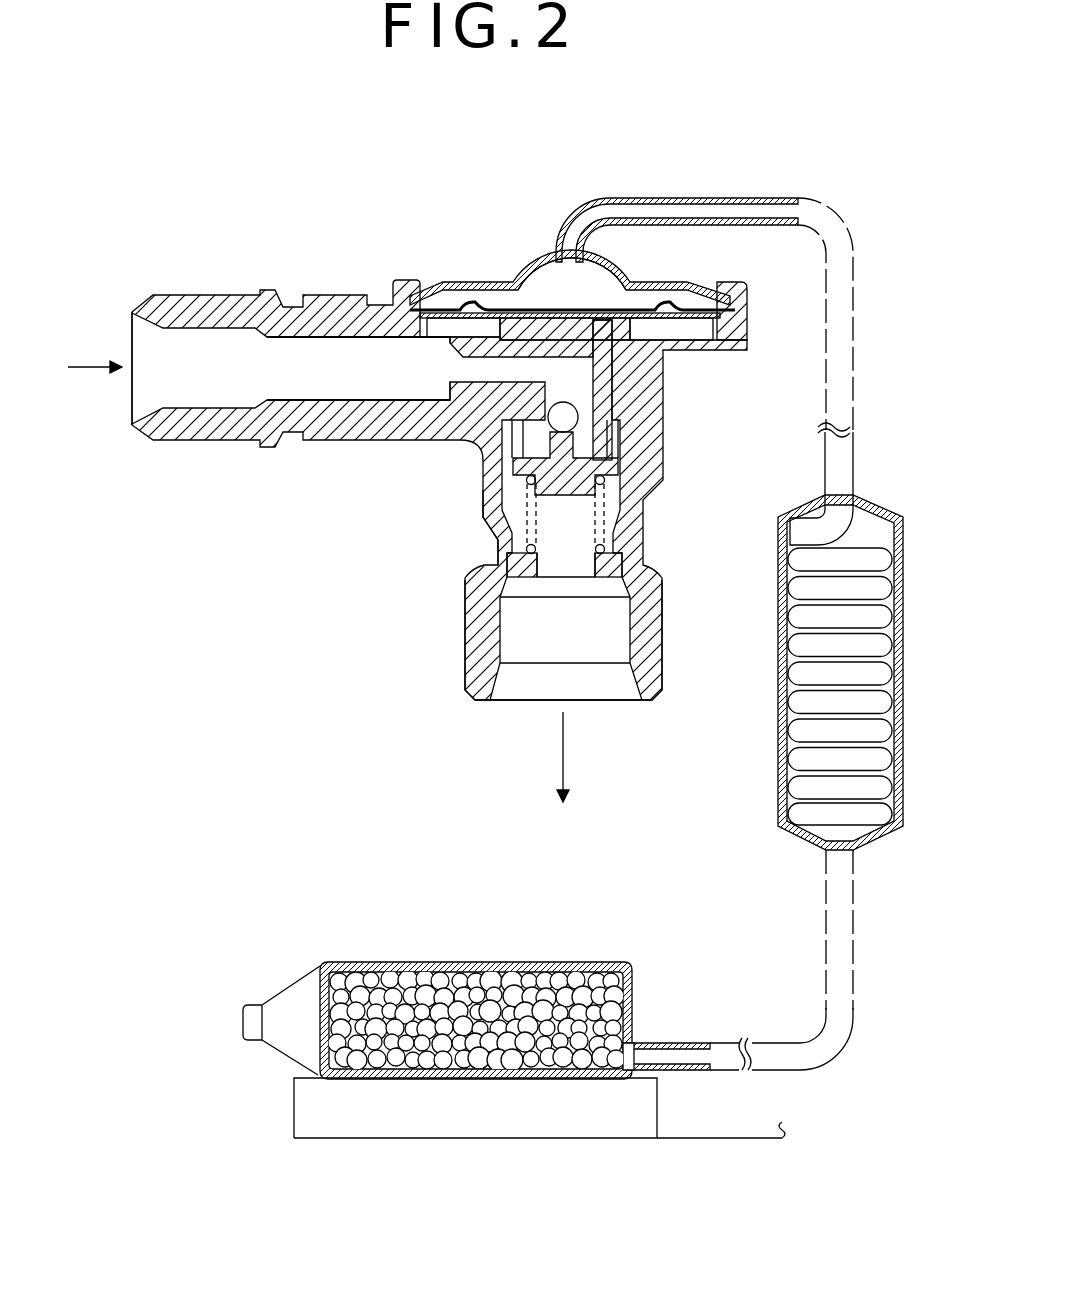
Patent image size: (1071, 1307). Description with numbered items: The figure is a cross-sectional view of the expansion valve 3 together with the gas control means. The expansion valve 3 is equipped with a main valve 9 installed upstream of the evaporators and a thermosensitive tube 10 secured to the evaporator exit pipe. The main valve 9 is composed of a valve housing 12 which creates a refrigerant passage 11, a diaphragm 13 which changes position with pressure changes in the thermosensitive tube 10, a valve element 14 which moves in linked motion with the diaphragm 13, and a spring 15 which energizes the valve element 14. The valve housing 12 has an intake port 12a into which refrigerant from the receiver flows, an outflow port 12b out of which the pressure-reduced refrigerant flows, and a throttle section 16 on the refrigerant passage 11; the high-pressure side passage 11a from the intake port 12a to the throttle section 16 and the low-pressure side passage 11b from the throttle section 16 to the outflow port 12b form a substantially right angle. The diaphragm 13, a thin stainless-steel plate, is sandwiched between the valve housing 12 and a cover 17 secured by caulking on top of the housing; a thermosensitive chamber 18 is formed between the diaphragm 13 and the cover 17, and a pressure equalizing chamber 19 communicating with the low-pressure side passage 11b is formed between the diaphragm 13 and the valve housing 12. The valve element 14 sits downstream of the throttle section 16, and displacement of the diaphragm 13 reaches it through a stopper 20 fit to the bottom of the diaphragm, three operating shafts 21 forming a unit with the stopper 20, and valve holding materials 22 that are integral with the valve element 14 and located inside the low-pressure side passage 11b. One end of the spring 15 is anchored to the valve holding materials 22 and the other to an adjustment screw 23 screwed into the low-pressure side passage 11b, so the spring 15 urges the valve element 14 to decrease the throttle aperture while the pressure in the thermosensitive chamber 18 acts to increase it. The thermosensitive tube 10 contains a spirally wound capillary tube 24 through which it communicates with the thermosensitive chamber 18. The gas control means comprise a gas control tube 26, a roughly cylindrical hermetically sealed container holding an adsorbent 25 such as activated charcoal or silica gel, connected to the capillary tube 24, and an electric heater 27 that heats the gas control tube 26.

The expansion valve 3 is at (634, 187).
The main valve 9 is at (296, 287).
The thermosensitive tube 10 is at (770, 705).
The refrigerant passage 11 is at (367, 353).
The high-pressure side passage 11a is at (334, 384).
The low-pressure side passage 11b is at (591, 541).
The valve housing 12 is at (343, 442).
The intake port 12a is at (133, 337).
The outflow port 12b is at (502, 683).
The diaphragm 13 is at (578, 303).
The valve element 14 is at (582, 448).
The spring 15 is at (610, 526).
The throttle section 16 is at (574, 412).
The cover 17 is at (540, 258).
The thermosensitive chamber 18 is at (588, 303).
The pressure equalizing chamber 19 is at (667, 325).
The stopper 20 is at (602, 312).
The operating shafts 21 is at (620, 498).
The valve holding materials 22 is at (499, 516).
The adjustment screw 23 is at (516, 568).
The capillary tube 24 is at (823, 288).
The adsorbent 25 is at (532, 965).
The gas control tube 26 is at (438, 975).
The electric heater 27 is at (415, 1115).